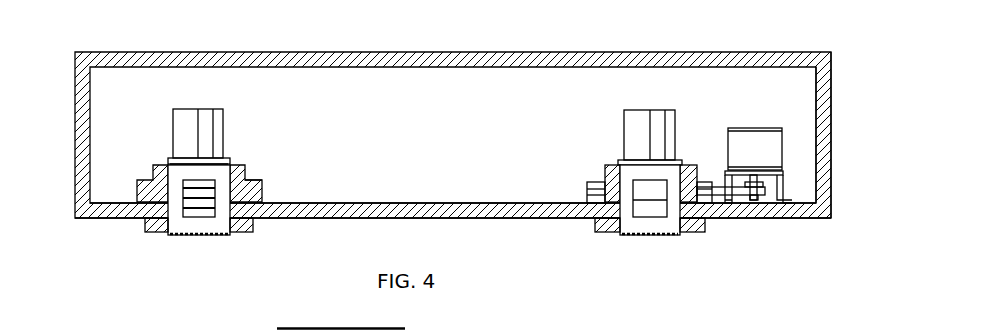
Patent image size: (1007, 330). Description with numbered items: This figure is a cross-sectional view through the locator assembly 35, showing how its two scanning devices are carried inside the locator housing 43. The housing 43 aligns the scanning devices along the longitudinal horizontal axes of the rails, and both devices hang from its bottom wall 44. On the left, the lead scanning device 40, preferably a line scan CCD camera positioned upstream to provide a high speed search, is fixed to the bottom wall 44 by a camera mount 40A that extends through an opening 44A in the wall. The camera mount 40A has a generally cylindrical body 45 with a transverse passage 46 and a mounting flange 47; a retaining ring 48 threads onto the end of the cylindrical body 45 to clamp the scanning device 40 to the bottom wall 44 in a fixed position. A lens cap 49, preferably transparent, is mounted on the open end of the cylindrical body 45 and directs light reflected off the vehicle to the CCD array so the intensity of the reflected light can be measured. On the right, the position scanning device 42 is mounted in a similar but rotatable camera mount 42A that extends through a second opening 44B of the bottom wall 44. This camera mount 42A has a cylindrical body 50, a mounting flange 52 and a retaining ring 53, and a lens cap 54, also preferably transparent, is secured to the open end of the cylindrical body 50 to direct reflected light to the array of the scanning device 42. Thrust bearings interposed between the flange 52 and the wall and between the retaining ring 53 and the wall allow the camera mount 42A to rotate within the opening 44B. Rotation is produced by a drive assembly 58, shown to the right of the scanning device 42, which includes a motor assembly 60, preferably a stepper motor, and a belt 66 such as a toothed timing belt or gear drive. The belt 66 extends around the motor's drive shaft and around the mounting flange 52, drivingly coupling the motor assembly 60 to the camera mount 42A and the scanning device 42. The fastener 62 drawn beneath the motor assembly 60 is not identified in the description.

The locator assembly 35 is at (843, 72).
The locator housing 43 is at (833, 157).
The bottom wall 44 is at (380, 212).
The scanning device 40 is at (242, 113).
The camera mount 40A is at (257, 163).
The transverse passage 46 is at (178, 177).
The cylindrical body 45 is at (262, 183).
The mounting flange 47 is at (262, 190).
The retaining ring 48 is at (242, 230).
The opening 44A is at (167, 222).
The lens cap 49 is at (188, 237).
The scanning device 42 is at (652, 98).
The camera mount 42A is at (697, 242).
The belt 66 is at (600, 180).
The mounting flange 52 is at (588, 198).
The retaining ring 53 is at (590, 230).
The opening 44B is at (617, 233).
The lens cap 54 is at (637, 238).
The cylindrical body 50 is at (707, 185).
The drive assembly 58 is at (753, 107).
The motor assembly 60 is at (737, 143).
The fastener 62 is at (785, 183).